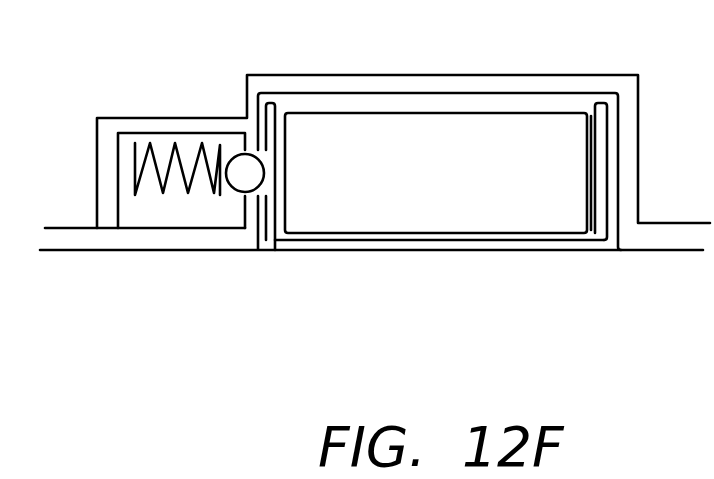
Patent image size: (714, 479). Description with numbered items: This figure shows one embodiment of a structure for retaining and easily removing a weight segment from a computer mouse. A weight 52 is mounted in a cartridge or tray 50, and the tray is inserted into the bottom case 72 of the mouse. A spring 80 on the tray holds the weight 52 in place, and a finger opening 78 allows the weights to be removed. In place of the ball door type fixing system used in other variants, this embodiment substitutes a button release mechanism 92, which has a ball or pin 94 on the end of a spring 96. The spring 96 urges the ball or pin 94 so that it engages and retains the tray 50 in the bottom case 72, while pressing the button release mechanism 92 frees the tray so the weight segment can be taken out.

The cartridge or tray 50 is at (440, 212).
The weight 52 is at (357, 242).
The bottom case 72 is at (215, 240).
The finger opening 78 is at (275, 250).
The spring 80 is at (578, 175).
The button release mechanism 92 is at (203, 140).
The ball or pin 94 is at (249, 166).
The spring 96 is at (150, 193).